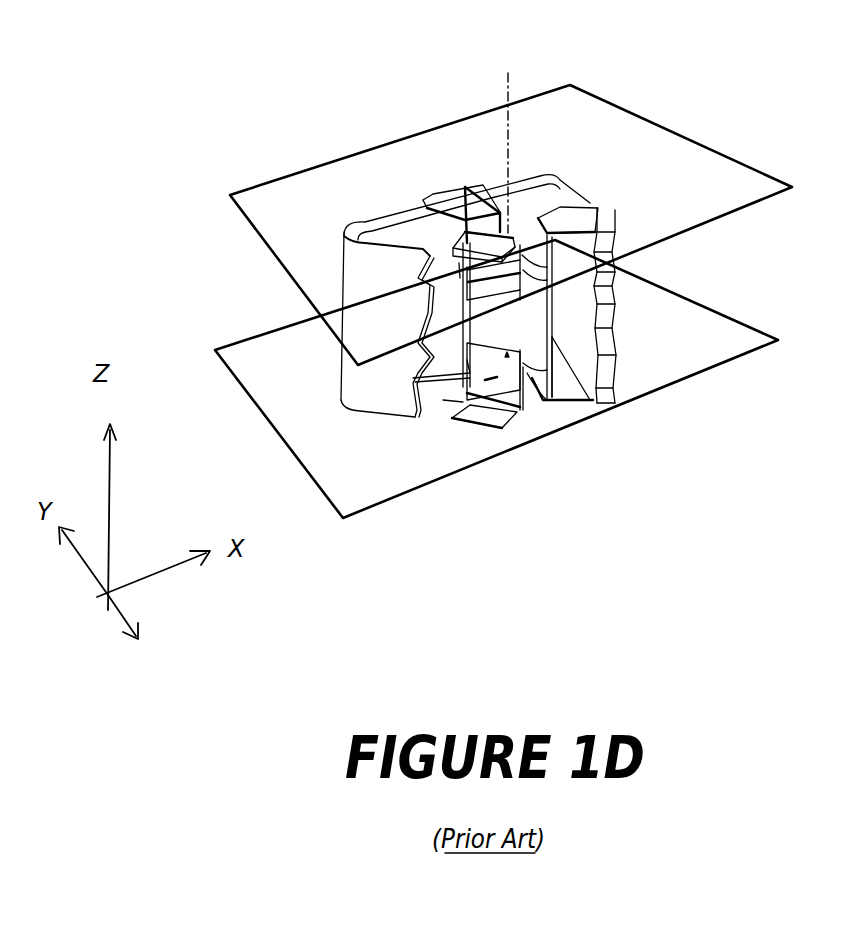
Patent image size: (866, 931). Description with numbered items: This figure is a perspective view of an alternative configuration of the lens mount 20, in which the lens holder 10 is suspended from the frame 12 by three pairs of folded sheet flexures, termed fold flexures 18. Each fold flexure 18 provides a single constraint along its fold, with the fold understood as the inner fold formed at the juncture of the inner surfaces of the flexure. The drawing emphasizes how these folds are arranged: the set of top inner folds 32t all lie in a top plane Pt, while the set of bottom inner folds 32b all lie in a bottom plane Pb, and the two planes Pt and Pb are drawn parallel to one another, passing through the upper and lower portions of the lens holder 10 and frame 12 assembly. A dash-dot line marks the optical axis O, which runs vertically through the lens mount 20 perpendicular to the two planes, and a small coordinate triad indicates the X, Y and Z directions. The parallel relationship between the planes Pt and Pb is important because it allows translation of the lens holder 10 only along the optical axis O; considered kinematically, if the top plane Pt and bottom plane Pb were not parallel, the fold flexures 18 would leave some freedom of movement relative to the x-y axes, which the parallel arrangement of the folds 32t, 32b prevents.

The lens holder 10 is at (523, 368).
The frame 12 is at (500, 185).
The fold flexure 18 is at (577, 220).
The lens mount 20 is at (232, 292).
The top inner fold 32t is at (537, 217).
The bottom inner fold 32b is at (543, 400).
The optical axis O is at (505, 97).
The top plane Pt is at (745, 182).
The bottom plane Pb is at (735, 345).